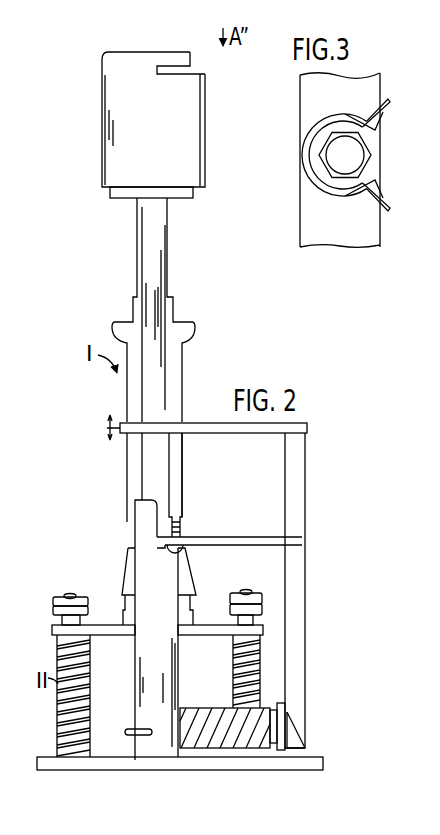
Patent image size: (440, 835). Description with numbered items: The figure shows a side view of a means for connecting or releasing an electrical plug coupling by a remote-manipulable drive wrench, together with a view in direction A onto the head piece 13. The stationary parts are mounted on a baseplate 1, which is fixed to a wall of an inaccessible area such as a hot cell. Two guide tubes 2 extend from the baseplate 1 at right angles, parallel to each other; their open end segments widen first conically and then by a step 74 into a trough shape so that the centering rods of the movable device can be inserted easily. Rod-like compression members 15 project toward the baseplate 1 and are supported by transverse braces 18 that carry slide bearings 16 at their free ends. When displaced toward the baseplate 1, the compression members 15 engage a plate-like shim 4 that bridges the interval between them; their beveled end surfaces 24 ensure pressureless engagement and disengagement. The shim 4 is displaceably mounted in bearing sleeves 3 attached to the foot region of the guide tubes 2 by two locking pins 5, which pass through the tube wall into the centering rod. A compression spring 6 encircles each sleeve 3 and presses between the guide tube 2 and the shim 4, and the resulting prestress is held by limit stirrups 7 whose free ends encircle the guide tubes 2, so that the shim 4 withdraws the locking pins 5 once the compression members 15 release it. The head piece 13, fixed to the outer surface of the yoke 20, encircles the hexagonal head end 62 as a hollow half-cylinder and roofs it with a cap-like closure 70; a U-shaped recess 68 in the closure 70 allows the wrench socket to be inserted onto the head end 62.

In FIG. 2, the baseplate 1 is at (45, 757).
In FIG. 2, the guide tube 2 is at (147, 562).
In FIG. 2, the bearing sleeve 3 is at (202, 715).
In FIG. 2, the shim 4 is at (282, 712).
In FIG. 2, the locking pin 5 is at (270, 730).
In FIG. 2, the compression spring 6 is at (268, 708).
In FIG. 2, the limit stirrup 7 is at (130, 727).
In FIG. 2, the head piece 13 is at (110, 94).
In FIG. 3, the head piece 13 is at (340, 187).
In FIG. 2, the compression member 15 is at (292, 480).
In FIG. 2, the slide bearing 16 is at (160, 427).
In FIG. 2, the transverse brace 18 is at (250, 537).
In FIG. 3, the yoke 20 is at (362, 228).
In FIG. 2, the beveled end surface 24 is at (298, 724).
In FIG. 3, the hexagonal head end 62 is at (352, 148).
In FIG. 3, the U-shaped recess 68 is at (357, 180).
In FIG. 2, the cap-like closure 70 is at (190, 55).
In FIG. 3, the cap-like closure 70 is at (310, 140).
In FIG. 2, the step 74 is at (178, 556).